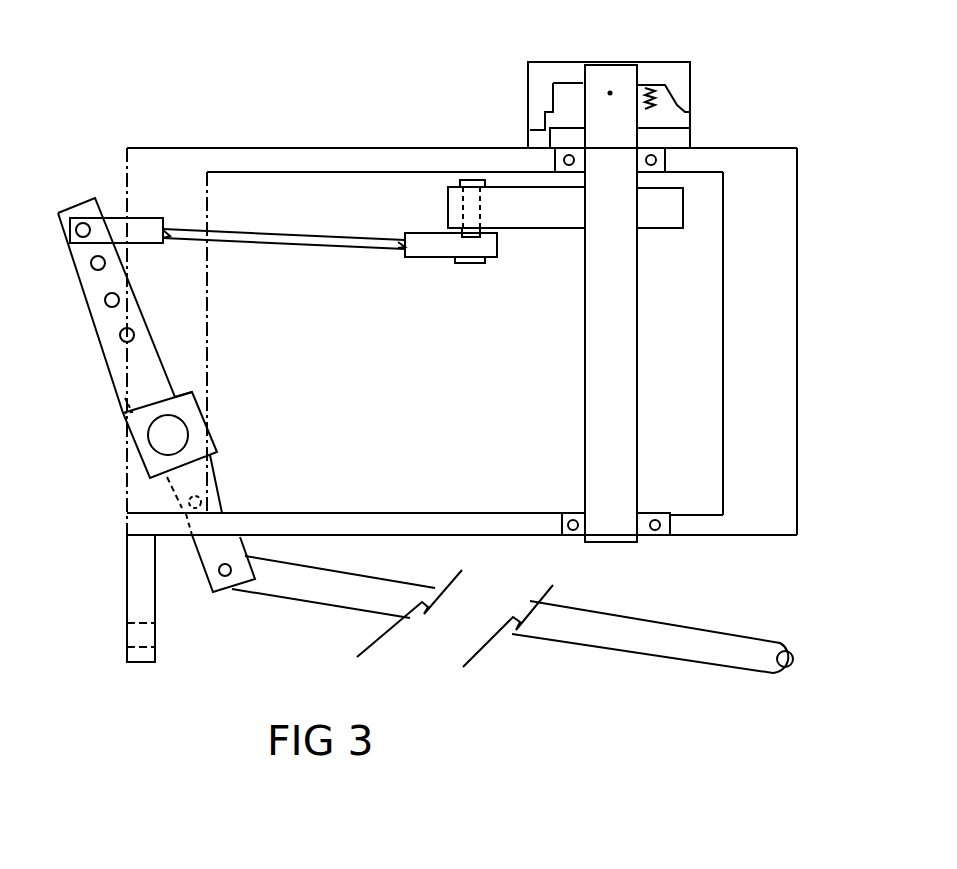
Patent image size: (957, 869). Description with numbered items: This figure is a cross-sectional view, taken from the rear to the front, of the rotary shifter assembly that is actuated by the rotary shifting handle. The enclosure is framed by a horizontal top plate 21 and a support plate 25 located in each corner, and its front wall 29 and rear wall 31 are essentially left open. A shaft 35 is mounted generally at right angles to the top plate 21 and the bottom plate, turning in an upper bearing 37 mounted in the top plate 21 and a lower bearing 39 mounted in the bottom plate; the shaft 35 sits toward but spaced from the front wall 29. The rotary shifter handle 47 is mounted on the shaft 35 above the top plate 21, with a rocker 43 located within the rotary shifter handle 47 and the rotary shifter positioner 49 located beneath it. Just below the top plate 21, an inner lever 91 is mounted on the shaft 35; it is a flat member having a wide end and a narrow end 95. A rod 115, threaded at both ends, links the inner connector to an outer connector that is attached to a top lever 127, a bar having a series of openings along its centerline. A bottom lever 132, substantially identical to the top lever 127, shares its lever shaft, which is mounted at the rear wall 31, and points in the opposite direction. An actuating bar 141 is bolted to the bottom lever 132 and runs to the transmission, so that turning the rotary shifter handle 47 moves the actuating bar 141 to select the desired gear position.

The top plate 21 is at (492, 152).
The support plate 25 is at (778, 202).
The front wall 29 is at (797, 313).
The rear wall 31 is at (128, 468).
The shaft 35 is at (598, 312).
The upper bearing 37 is at (660, 153).
The lower bearing 39 is at (582, 515).
The rocker 43 is at (570, 100).
The rotary shifter handle 47 is at (657, 62).
The rotary shifter positioner 49 is at (667, 133).
The inner lever 91 is at (660, 215).
The narrow end 95 is at (448, 205).
The rod 115 is at (350, 243).
The top lever 127 is at (100, 297).
The bottom lever 132 is at (220, 503).
The actuating bar 141 is at (702, 653).